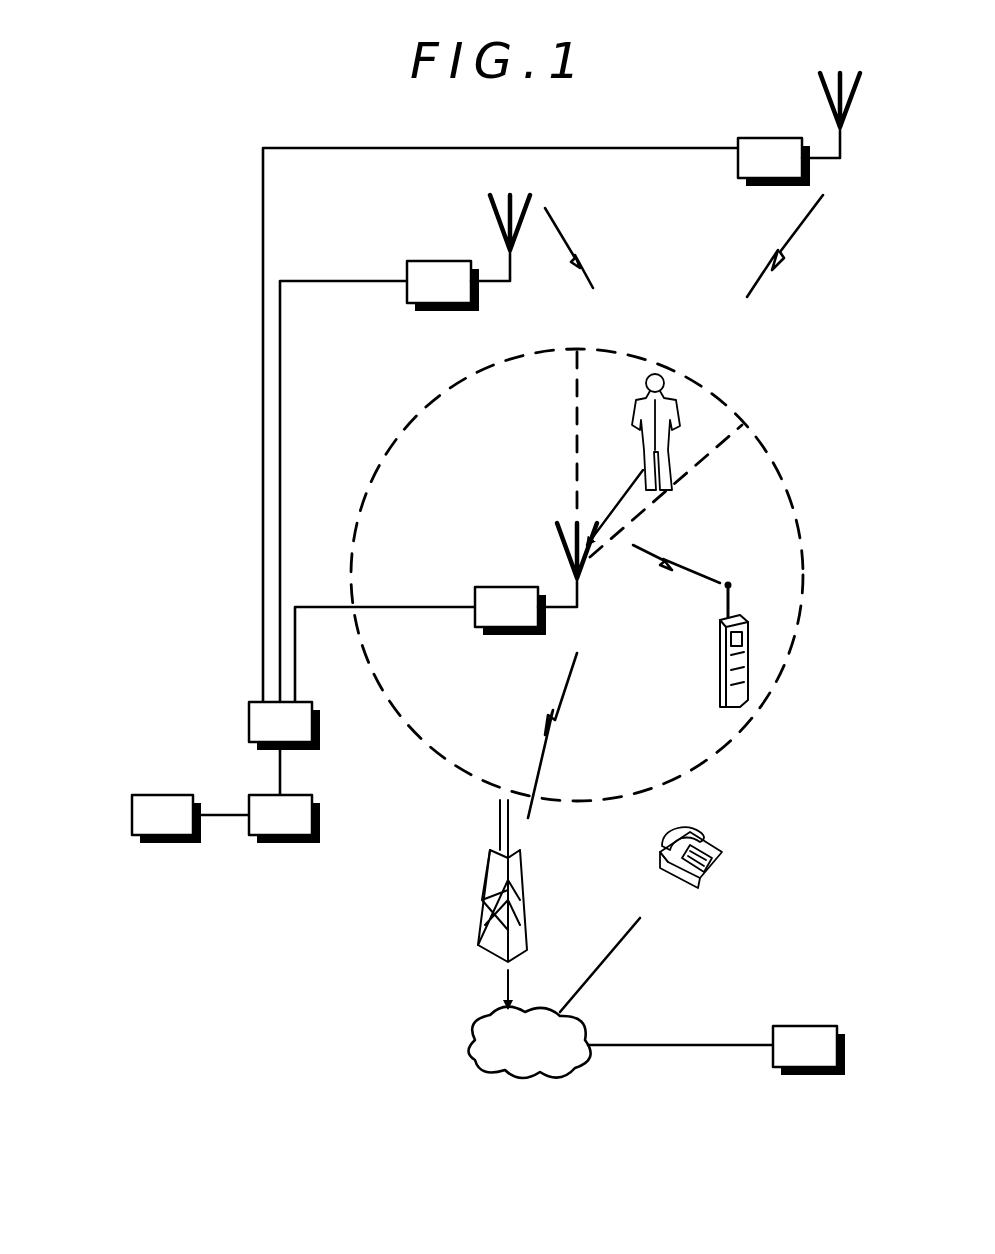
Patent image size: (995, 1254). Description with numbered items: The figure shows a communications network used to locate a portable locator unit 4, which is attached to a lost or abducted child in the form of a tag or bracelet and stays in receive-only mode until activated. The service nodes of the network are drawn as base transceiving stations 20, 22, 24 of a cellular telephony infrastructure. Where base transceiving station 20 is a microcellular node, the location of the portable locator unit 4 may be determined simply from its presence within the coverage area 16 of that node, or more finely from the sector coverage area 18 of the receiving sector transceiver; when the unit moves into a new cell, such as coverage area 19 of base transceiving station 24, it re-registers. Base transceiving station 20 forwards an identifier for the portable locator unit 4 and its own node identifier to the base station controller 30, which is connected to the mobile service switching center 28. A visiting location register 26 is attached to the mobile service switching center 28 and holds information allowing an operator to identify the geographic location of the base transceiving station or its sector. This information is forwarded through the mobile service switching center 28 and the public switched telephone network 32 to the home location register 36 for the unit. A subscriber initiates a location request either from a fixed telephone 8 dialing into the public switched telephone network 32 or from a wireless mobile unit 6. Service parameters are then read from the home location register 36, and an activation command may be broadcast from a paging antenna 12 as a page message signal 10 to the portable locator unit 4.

The portable locator unit 4 is at (672, 418).
The mobile unit 6 is at (718, 648).
The telephone 8 is at (707, 883).
The page message signal 10 is at (548, 728).
The paging antenna 12 is at (514, 830).
The coverage area 16 is at (778, 538).
The sector coverage area 18 is at (612, 378).
The coverage area 19 is at (833, 262).
The base transceiving station 20 is at (510, 587).
The base transceiving station 22 is at (440, 261).
The base transceiving station 24 is at (770, 138).
The visiting location register 26 is at (132, 814).
The mobile service switching center 28 is at (287, 843).
The base station controller 30 is at (249, 722).
The public switched telephone network 32 is at (465, 1040).
The home location register 36 is at (805, 1026).